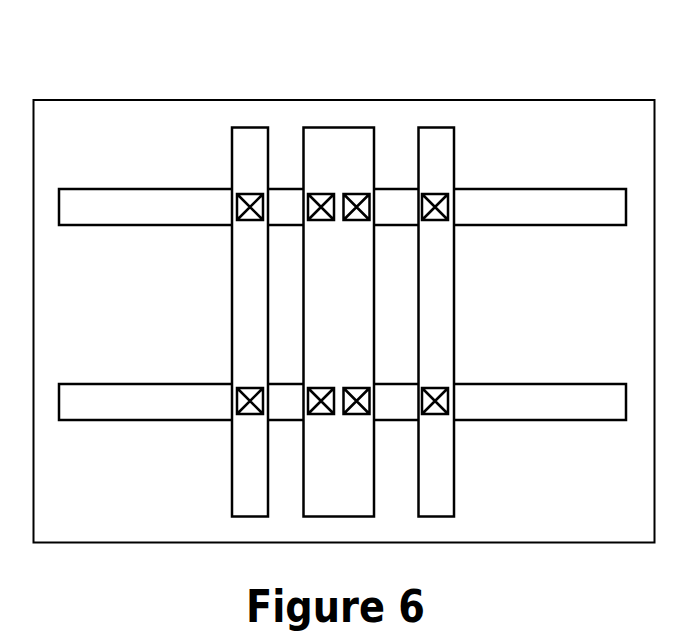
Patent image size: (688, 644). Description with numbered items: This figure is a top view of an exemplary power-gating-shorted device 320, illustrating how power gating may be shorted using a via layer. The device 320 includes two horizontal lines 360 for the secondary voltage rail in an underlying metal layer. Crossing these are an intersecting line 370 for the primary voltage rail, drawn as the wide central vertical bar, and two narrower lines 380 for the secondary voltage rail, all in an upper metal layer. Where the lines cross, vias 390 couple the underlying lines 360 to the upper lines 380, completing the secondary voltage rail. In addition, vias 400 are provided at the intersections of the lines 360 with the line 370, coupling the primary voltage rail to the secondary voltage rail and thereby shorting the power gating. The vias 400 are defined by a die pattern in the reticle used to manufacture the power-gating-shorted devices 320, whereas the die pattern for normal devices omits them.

The power-gating-shorted device 320 is at (647, 516).
The lines for the secondary voltage rail 360 is at (174, 189).
The intersecting line for the primary voltage rail 370 is at (340, 128).
The lines for the secondary voltage rail 380 is at (231, 295).
The vias 390 is at (248, 196).
The vias 400 is at (318, 196).